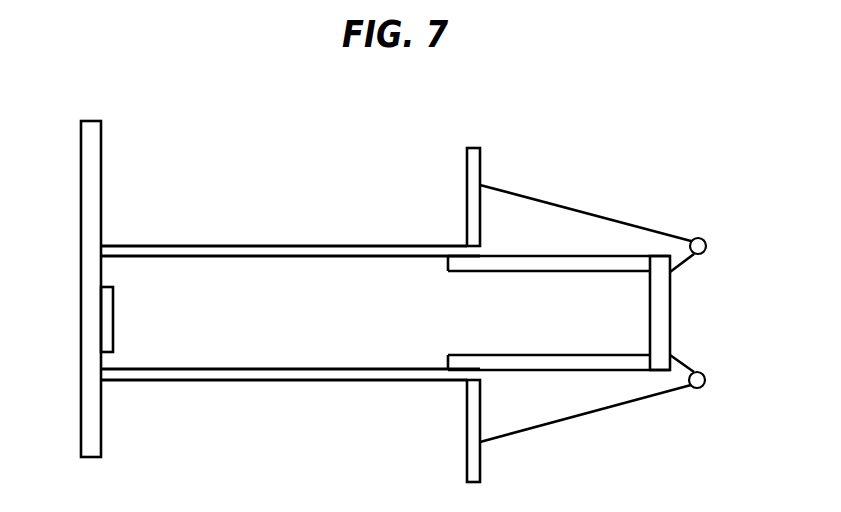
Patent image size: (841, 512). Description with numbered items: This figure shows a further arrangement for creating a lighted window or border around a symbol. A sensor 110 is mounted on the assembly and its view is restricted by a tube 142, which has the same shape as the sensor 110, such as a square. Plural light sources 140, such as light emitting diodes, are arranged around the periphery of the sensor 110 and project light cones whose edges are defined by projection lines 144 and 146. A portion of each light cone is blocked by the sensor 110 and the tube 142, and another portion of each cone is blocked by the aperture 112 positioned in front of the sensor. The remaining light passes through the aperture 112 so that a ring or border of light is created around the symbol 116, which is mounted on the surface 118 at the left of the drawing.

The sensor 110 is at (670, 313).
The aperture 112 is at (467, 202).
The symbol 116 is at (113, 330).
The surface 118 is at (80, 188).
The light sources 140 is at (705, 243).
The tube 142 is at (535, 355).
The projection line 144 is at (690, 362).
The projection line 146 is at (645, 223).